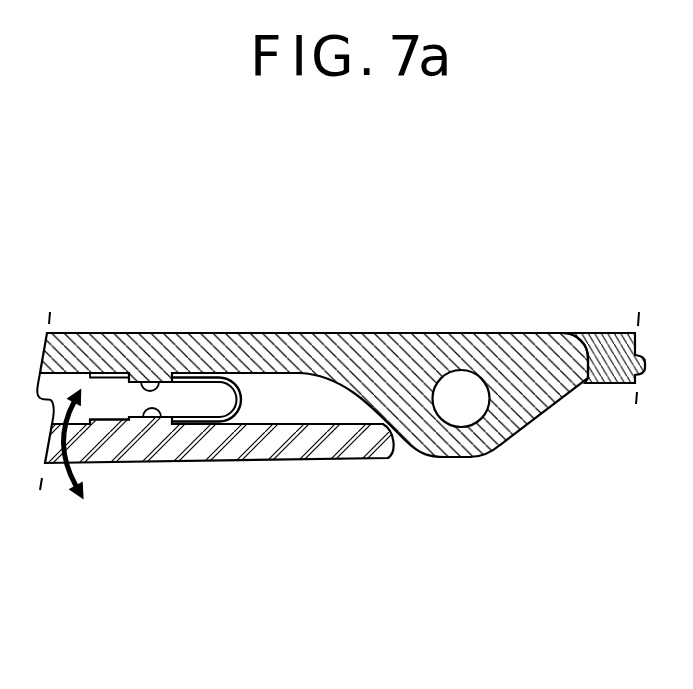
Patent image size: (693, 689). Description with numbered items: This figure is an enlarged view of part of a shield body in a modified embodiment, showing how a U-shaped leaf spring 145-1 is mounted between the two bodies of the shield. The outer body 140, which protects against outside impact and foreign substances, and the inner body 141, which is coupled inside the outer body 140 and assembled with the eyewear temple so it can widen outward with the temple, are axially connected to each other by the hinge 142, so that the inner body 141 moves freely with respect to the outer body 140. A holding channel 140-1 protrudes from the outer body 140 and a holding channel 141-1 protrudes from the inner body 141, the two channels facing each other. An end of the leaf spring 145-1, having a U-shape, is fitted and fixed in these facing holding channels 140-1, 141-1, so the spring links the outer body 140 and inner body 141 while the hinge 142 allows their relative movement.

The inner body 141 is at (255, 353).
The holding channel 141-1 is at (150, 388).
The outer body 140 is at (253, 443).
The holding channel 140-1 is at (152, 410).
The leaf spring 145-1 is at (243, 401).
The hinge 142 is at (458, 413).